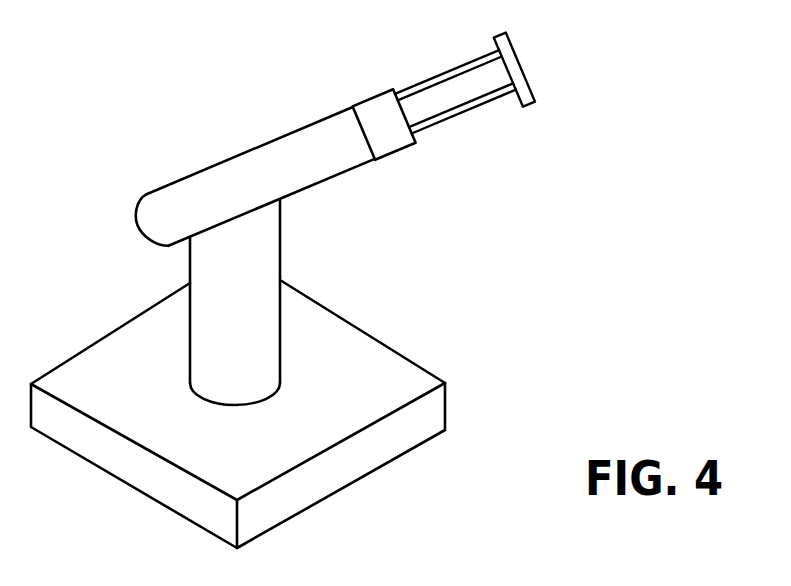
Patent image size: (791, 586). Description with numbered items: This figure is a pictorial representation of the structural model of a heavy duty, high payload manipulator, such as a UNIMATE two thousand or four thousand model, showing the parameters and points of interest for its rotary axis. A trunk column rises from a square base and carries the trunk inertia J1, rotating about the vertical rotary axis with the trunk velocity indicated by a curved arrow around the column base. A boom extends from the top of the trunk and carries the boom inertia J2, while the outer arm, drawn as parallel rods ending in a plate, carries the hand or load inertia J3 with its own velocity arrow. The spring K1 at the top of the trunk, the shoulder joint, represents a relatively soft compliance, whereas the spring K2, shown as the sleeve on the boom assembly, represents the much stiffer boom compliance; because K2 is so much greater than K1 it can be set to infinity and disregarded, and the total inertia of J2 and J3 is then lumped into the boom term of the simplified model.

The spring K1 is at (237, 190).
The spring K2 is at (415, 140).
The trunk inertia J1 is at (281, 277).
The boom inertia J2 is at (277, 168).
The hand or load (outer arm) inertia J3 is at (428, 82).